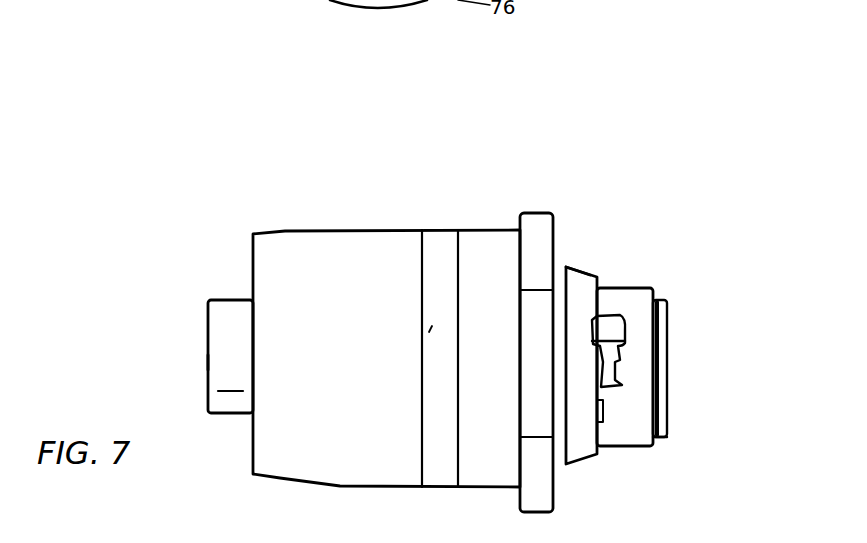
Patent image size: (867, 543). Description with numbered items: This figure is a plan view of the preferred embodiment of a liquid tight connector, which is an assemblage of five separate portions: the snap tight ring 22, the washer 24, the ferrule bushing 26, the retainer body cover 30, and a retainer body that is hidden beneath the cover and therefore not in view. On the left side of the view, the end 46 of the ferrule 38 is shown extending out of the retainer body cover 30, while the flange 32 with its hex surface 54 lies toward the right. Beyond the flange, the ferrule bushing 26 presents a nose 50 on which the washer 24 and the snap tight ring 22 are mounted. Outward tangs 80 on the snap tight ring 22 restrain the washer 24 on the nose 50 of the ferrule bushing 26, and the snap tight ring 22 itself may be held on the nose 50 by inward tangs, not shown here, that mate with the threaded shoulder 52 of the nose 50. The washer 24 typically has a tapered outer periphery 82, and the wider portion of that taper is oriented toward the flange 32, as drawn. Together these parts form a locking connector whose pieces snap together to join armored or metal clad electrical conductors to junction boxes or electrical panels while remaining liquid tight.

The snap tight ring 22 is at (645, 292).
The washer 24 is at (580, 287).
The ferrule bushing 26 is at (225, 315).
The retainer body cover 30 is at (323, 268).
The flange 32 is at (535, 213).
The ferrule 38 is at (232, 378).
The end 46 is at (226, 360).
The nose 50 is at (665, 412).
The threaded shoulder 52 is at (661, 443).
The hex surface 54 is at (540, 477).
The outward tangs 80 is at (610, 333).
The tapered outer periphery 82 is at (578, 263).